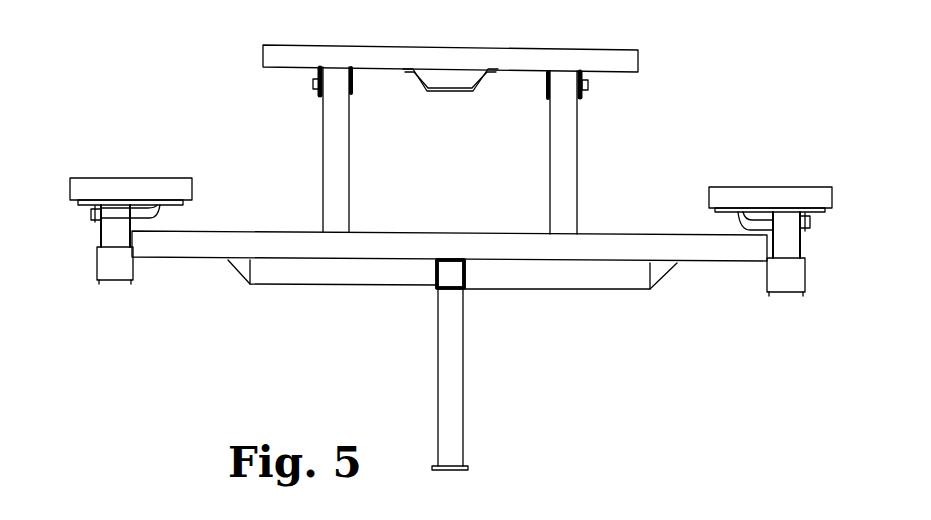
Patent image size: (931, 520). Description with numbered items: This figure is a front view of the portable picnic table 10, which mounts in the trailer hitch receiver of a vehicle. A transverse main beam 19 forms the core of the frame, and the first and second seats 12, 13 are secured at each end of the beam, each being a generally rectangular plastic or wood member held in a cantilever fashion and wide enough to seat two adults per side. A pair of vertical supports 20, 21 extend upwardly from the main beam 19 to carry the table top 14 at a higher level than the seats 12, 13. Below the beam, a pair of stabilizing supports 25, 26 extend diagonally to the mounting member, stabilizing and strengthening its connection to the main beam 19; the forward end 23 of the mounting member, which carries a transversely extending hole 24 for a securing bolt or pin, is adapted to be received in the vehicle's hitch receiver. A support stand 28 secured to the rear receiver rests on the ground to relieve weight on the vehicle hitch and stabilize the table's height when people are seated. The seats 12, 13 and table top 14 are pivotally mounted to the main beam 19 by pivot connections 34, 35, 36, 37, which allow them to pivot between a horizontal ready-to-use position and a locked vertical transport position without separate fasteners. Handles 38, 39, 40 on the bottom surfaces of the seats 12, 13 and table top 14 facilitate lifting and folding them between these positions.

The portable picnic table 10 is at (200, 372).
The first seat 12 is at (115, 180).
The second seat 13 is at (777, 192).
The table top 14 is at (530, 50).
The transverse main beam 19 is at (223, 238).
The vertical support 20 is at (340, 150).
The vertical support 21 is at (568, 153).
The forward end 23 is at (433, 277).
The transversely extending hole 24 is at (450, 274).
The stabilizing support 25 is at (305, 277).
The stabilizing support 26 is at (570, 282).
The support stand 28 is at (450, 373).
The pivot connection 34 is at (91, 215).
The pivot connection 35 is at (810, 222).
The pivot connection 36 is at (317, 85).
The pivot connection 37 is at (588, 85).
The handle 38 is at (160, 213).
The handle 39 is at (740, 222).
The handle 40 is at (457, 95).